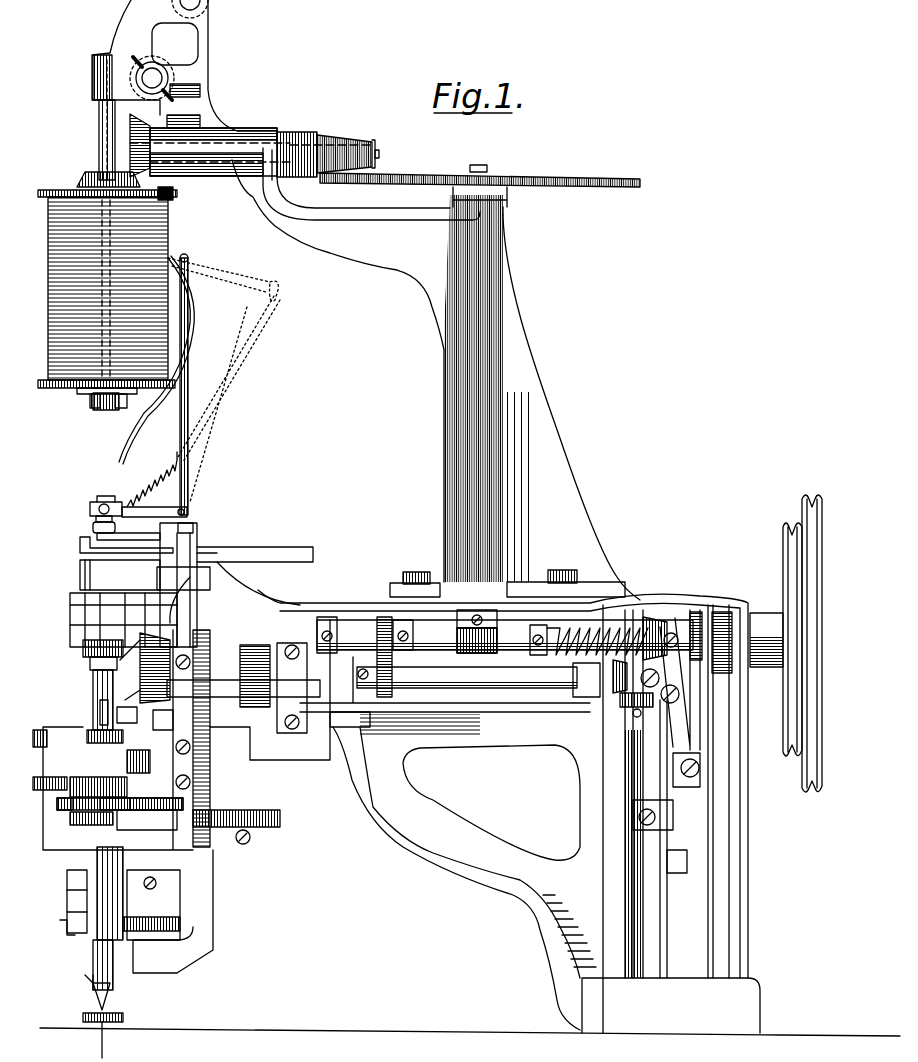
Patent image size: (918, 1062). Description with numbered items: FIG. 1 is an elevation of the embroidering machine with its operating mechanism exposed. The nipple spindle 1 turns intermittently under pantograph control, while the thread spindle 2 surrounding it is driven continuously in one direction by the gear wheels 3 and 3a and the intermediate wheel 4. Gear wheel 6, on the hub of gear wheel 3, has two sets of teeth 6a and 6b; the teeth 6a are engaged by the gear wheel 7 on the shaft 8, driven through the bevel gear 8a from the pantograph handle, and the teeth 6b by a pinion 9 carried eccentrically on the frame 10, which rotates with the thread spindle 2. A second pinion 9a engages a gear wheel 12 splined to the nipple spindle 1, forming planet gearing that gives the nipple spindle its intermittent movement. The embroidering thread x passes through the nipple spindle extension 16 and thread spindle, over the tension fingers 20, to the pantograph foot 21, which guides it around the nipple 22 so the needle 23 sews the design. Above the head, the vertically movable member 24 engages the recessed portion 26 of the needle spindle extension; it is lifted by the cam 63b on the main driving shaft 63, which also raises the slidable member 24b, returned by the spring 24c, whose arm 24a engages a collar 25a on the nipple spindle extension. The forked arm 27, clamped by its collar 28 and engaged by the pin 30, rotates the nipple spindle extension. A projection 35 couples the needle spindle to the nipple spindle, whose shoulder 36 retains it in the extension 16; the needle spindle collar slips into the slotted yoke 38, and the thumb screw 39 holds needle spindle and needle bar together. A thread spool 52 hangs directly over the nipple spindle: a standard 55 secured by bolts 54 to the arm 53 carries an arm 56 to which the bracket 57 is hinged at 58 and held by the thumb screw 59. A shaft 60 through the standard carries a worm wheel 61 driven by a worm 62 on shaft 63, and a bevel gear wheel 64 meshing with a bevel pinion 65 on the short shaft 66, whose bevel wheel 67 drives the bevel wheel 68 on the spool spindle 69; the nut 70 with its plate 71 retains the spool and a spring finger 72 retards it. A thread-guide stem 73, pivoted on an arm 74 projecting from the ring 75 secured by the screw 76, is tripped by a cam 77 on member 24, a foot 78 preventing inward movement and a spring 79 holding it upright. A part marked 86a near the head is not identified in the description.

The nipple spindle 1 is at (113, 960).
The thread spindle 2 is at (110, 893).
The gear wheel 3 is at (70, 818).
The gear wheel 3a is at (237, 826).
The intermediate wheel 4 is at (158, 828).
The gear wheel 6 is at (82, 778).
The teeth 6a is at (57, 803).
The teeth 6b is at (110, 798).
The gear wheel 7 is at (137, 800).
The shaft 8 is at (150, 762).
The bevel gear 8a is at (127, 715).
The pinion 9 is at (49, 791).
The pinion 9a is at (37, 736).
The frame 10 is at (120, 783).
The gear wheel 12 is at (105, 736).
The nipple spindle extension 16 is at (123, 618).
The fingers 20 is at (67, 900).
The pantograph foot 21 is at (123, 1018).
The nipple 22 is at (108, 1003).
The needle 23 is at (112, 1040).
The vertically movable member 24 is at (178, 585).
The arm 24a is at (102, 564).
The slidable member 24b is at (208, 547).
The spring 24c is at (183, 578).
The collar 25a is at (80, 550).
The recessed portion 26 is at (118, 536).
The forked arm 27 is at (138, 668).
The collar 28 is at (94, 648).
The pin 30 is at (163, 720).
The projection 35 is at (103, 663).
The shoulder or collar 36 is at (170, 681).
The slotted yoke 38 is at (96, 697).
The thumb screw 39 is at (100, 713).
The spool 52 is at (107, 289).
The arm 53 is at (437, 676).
The bolts 54 is at (506, 576).
The standard 55 is at (542, 397).
The arm 56 is at (210, 152).
The bracket 57 is at (162, 44).
The hinge 58 is at (201, 3).
The thumb screw 59 is at (136, 78).
The shaft 60 is at (488, 608).
The worm wheel 61 is at (462, 652).
The worm 62 is at (482, 655).
The main driving shaft 63 is at (505, 657).
The cam 63b is at (217, 607).
The bevel gear wheel 64 is at (480, 172).
The bevel pinion 65 is at (326, 147).
The short shaft 66 is at (379, 153).
The bevel wheel 67 is at (136, 142).
The bevel wheel 68 is at (108, 175).
The thread spool spindle 69 is at (99, 143).
The nut 70 is at (90, 407).
The plate 71 is at (128, 401).
The spring finger 72 is at (174, 194).
The vertical stem 73 is at (186, 404).
The arm 74 is at (154, 513).
The ring 75 is at (90, 508).
The screw 76 is at (93, 529).
The cam 77 is at (193, 528).
The foot 78 is at (176, 510).
The spring 79 is at (152, 479).
The guide 86a is at (100, 118).
The embroidering thread x is at (168, 257).